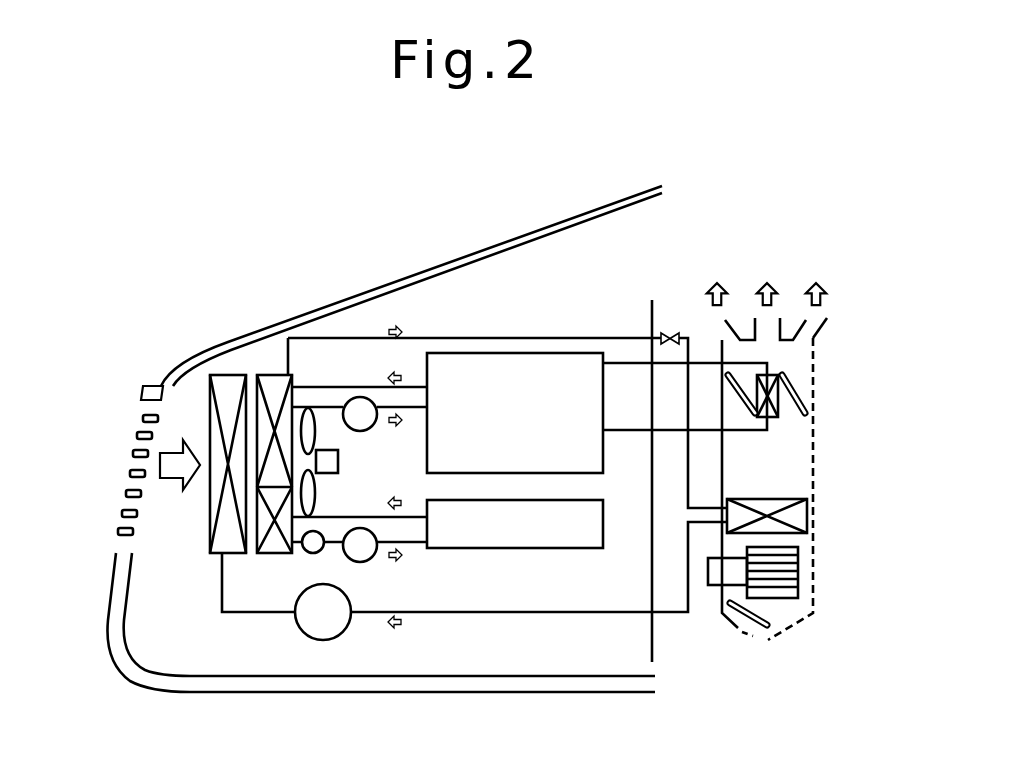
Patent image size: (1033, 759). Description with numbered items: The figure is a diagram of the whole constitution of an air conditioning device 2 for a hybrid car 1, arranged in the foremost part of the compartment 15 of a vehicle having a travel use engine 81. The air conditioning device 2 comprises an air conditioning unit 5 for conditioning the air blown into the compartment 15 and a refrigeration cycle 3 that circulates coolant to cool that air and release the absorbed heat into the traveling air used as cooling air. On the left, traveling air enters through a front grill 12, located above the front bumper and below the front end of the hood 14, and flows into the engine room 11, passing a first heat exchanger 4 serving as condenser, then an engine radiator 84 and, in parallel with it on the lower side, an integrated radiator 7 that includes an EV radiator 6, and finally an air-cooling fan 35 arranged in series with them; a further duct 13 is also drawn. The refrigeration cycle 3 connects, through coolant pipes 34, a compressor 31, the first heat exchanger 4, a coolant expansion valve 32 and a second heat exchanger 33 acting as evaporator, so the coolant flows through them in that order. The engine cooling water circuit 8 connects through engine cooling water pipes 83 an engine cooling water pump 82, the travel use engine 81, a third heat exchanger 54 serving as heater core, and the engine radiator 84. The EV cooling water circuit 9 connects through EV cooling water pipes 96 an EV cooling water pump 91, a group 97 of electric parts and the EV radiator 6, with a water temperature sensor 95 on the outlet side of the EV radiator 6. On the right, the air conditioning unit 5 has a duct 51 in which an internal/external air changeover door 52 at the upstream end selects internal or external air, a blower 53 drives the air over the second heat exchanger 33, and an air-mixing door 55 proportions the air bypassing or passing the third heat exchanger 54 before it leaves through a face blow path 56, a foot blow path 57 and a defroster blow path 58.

The hybrid car 1 is at (650, 155).
The air conditioning device 2 is at (708, 200).
The refrigeration cycle 3 is at (527, 638).
The first heat exchanger 4 is at (214, 365).
The air conditioning unit 5 is at (790, 248).
The EV radiator 6 is at (268, 565).
The integrated radiator 7 is at (266, 363).
The engine cooling water circuit 8 is at (352, 370).
The EV cooling water circuit 9 is at (414, 562).
The engine room 11 is at (497, 268).
The front grill 12 is at (142, 418).
The exhaust duct 13 is at (113, 632).
The hood 14 is at (445, 266).
The compartment 15 is at (712, 288).
The compressor 31 is at (312, 628).
The coolant expansion valve 32 is at (652, 300).
The second heat exchanger 33 is at (798, 515).
The coolant pipes 34 is at (604, 612).
The air-cooling fan 35 is at (339, 463).
The duct 51 is at (808, 468).
The internal/external air changeover door 52 is at (742, 620).
The blower 53 is at (790, 567).
The third heat exchanger 54 is at (770, 375).
The air-mixing door 55 is at (727, 390).
The face blow path 56 is at (738, 290).
The foot blow path 57 is at (793, 290).
The defroster blow path 58 is at (817, 330).
The travel use engine 81 is at (548, 367).
The engine cooling water pump 82 is at (360, 397).
The engine cooling water pipes 83 is at (617, 363).
The engine radiator 84 is at (275, 388).
The EV cooling water pump 91 is at (363, 562).
The water temperature sensor 95 is at (322, 553).
The EV cooling water pipes 96 is at (330, 517).
The group of electric parts 97 is at (525, 548).